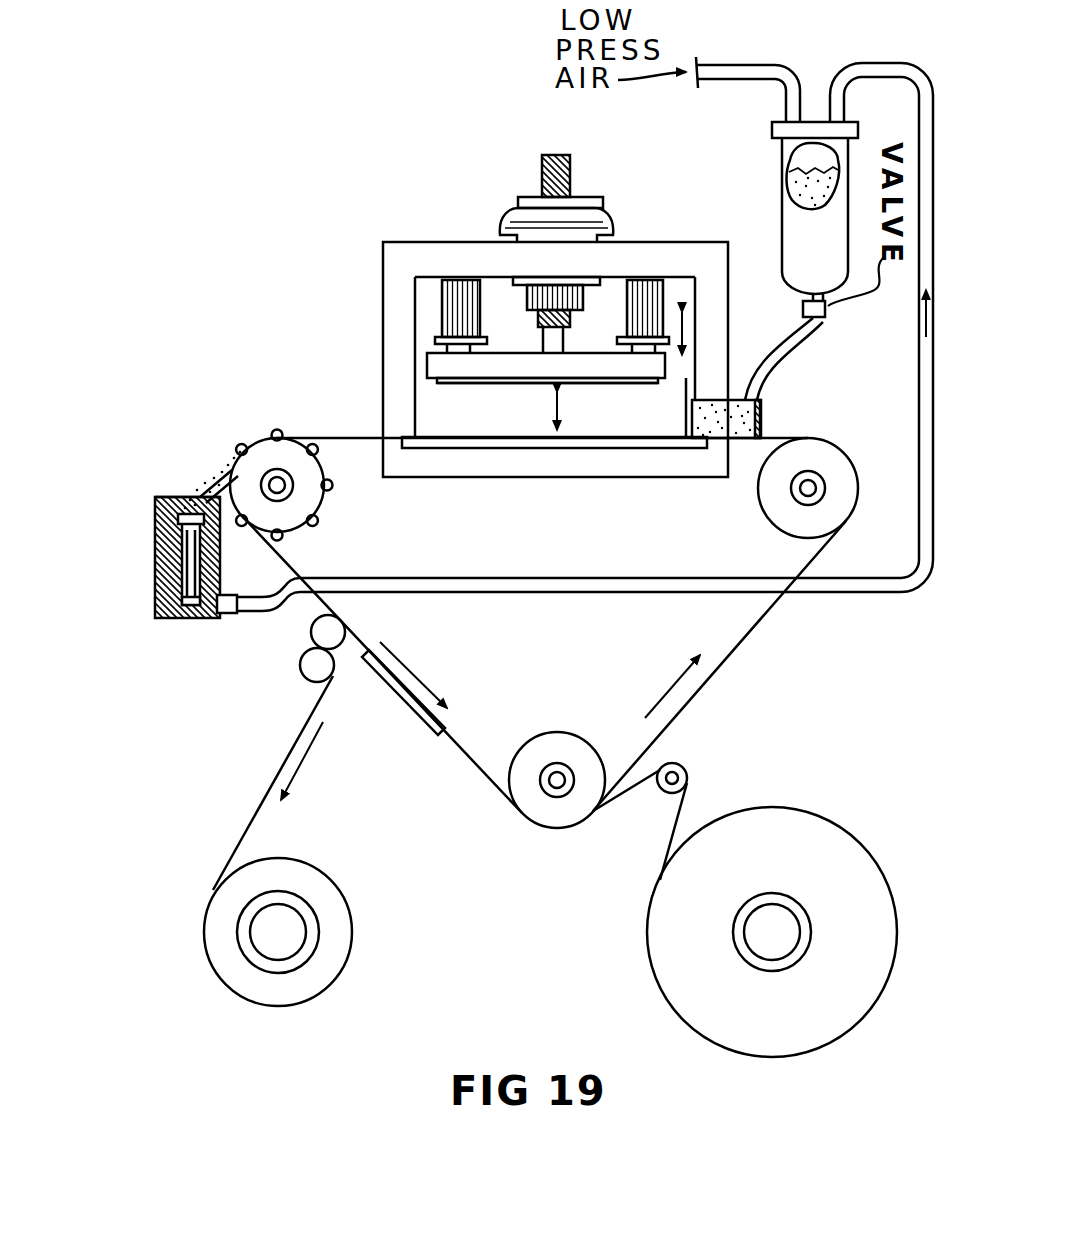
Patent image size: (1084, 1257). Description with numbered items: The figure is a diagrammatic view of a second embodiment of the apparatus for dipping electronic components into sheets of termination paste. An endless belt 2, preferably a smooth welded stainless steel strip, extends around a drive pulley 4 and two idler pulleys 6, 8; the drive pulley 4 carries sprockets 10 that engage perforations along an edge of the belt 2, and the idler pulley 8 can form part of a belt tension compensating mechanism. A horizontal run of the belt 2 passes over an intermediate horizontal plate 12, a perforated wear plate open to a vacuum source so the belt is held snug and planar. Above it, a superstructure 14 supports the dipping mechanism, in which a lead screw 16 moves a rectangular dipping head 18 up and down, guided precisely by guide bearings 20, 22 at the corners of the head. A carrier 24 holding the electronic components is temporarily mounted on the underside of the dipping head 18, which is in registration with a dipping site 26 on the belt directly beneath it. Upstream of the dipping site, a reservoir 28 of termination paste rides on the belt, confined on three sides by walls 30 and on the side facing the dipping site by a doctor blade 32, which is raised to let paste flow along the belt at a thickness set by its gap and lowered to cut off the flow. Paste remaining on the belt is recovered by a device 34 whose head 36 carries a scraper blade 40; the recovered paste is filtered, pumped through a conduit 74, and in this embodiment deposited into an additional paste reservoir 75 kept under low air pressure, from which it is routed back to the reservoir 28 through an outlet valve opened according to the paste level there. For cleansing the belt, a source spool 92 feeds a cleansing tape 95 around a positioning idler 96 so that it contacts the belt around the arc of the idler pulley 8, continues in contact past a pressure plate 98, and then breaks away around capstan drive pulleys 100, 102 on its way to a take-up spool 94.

The endless belt 2 is at (738, 672).
The drive pulley 4 is at (322, 502).
The idler pulley 6 is at (770, 518).
The idler pulley 8 is at (547, 732).
The sprockets 10 is at (277, 435).
The intermediate horizontal plate 12 is at (523, 448).
The superstructure 14 is at (728, 330).
The lead screw 16 is at (572, 172).
The dipping head 18 is at (427, 352).
The guide bearing 20 is at (445, 302).
The guide bearing 22 is at (672, 297).
The carrier 24 is at (607, 384).
The dipping site 26 is at (510, 437).
The reservoir 28 is at (755, 392).
The walls 30 is at (760, 400).
The doctor blade 32 is at (686, 415).
The paste recovering device 34 is at (148, 523).
The head 36 is at (155, 548).
The scraper blade 40 is at (204, 496).
The conduit 74 is at (852, 592).
The additional paste reservoir 75 is at (782, 183).
The source spool 92 is at (838, 823).
The take-up spool 94 is at (352, 912).
The cleansing tape 95 is at (275, 777).
The positioning idler 96 is at (688, 775).
The pressure plate 98 is at (430, 742).
The capstan drive pulley 100 is at (350, 636).
The capstan drive pulley 102 is at (300, 665).